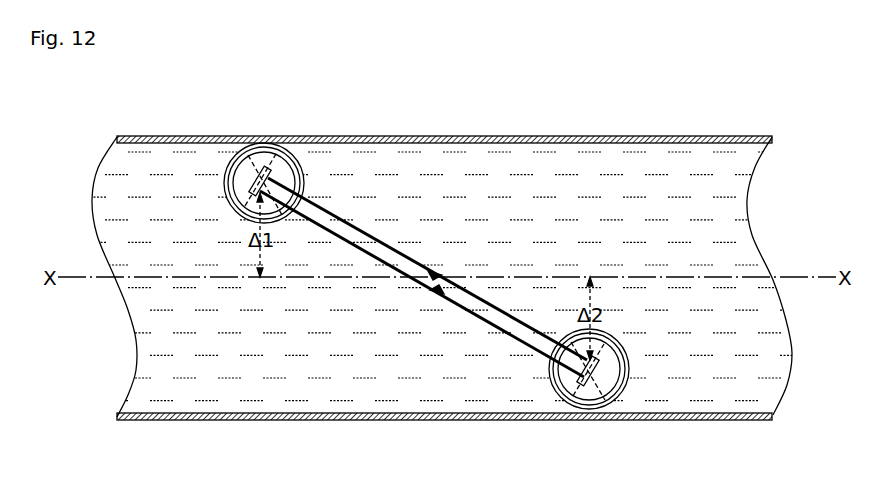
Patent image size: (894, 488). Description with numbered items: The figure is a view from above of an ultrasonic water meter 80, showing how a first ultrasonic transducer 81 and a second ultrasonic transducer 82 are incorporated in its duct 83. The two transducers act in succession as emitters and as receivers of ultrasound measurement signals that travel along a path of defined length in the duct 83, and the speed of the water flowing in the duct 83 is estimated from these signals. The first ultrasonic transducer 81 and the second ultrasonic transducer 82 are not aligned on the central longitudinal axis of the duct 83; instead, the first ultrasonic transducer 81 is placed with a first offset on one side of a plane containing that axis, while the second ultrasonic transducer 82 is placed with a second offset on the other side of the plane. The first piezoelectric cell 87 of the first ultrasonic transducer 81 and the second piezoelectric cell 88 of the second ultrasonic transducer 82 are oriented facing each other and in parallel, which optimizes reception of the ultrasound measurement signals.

The ultrasonic water meter 80 is at (588, 136).
The duct 83 is at (452, 136).
The first ultrasonic transducer 81 is at (291, 152).
The first piezoelectric cell 87 is at (252, 155).
The second ultrasonic transducer 82 is at (618, 391).
The second piezoelectric cell 88 is at (598, 394).